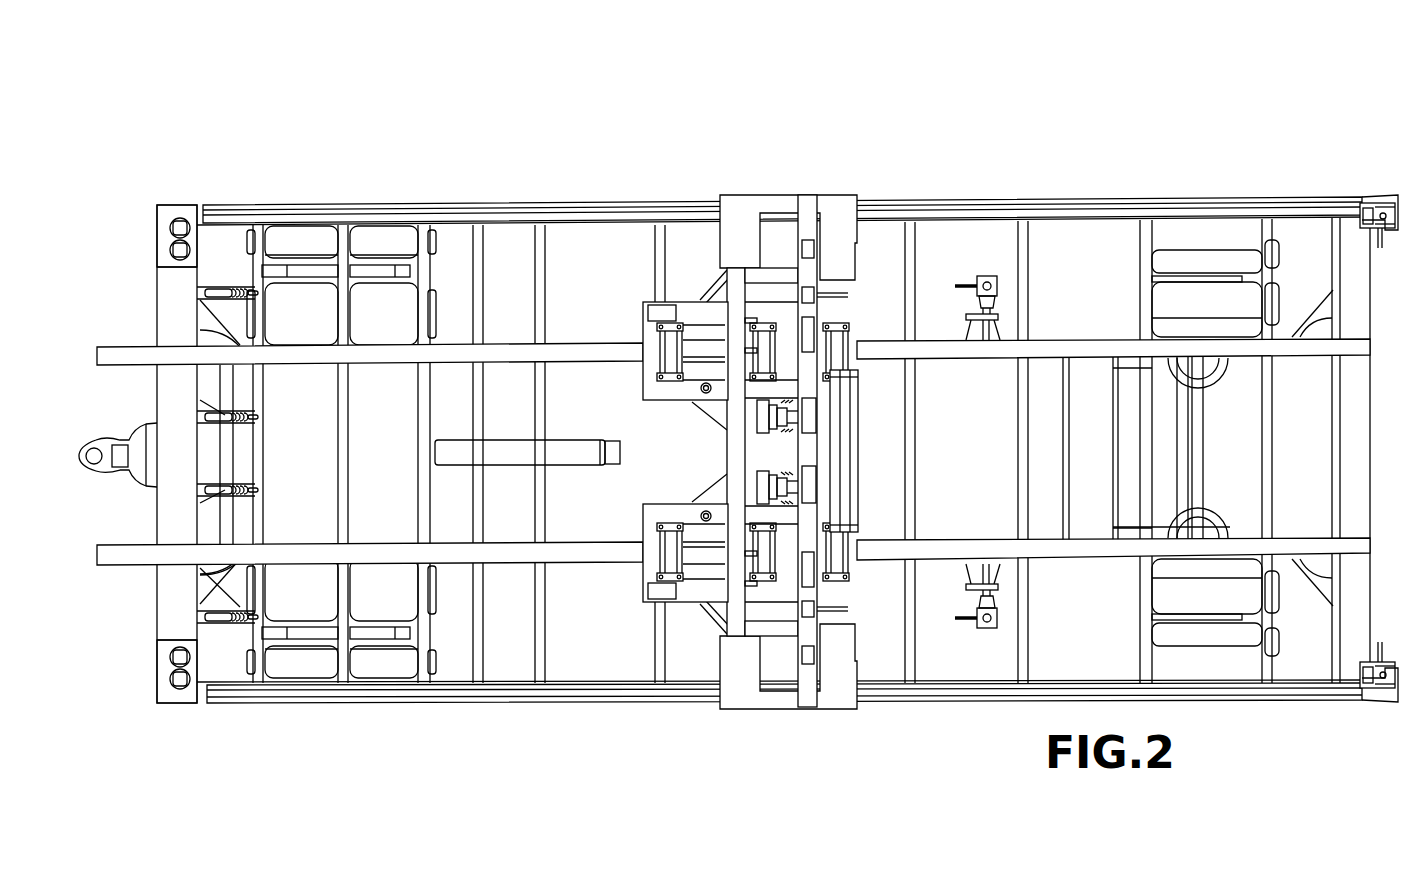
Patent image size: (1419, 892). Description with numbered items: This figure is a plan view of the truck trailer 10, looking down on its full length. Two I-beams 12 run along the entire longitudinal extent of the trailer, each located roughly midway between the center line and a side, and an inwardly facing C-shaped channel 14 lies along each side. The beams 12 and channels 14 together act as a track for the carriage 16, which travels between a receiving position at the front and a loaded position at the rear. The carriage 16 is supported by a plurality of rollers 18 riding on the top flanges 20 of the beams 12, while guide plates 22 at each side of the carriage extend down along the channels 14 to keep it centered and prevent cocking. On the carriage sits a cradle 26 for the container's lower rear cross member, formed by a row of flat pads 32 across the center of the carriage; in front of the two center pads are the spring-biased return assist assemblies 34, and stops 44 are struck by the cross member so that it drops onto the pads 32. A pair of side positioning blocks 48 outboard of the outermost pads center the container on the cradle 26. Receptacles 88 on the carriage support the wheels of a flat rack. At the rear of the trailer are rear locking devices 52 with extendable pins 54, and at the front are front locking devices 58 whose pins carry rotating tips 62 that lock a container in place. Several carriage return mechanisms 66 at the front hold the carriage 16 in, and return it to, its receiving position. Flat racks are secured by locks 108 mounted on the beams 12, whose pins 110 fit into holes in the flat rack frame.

The truck trailer 10 is at (975, 156).
The I-beam 12 is at (441, 343).
The C-shaped channel 14 is at (1208, 208).
The carriage 16 is at (785, 264).
The roller 18 is at (670, 374).
The top flange 20 is at (304, 365).
The guide plate 22 is at (752, 707).
The cradle 26 is at (863, 447).
The flat pad 32 is at (812, 414).
The return assist assembly 34 is at (752, 418).
The stop 44 is at (822, 296).
The side positioning block 48 is at (808, 238).
The rear locking device 52 is at (1390, 197).
The pin 54 is at (1368, 213).
The front locking device 58 is at (177, 202).
The rotating tip 62 is at (168, 228).
The carriage return mechanism 66 is at (190, 293).
The receptacle 88 is at (678, 304).
The lock 108 is at (1000, 287).
The pin 110 is at (960, 285).